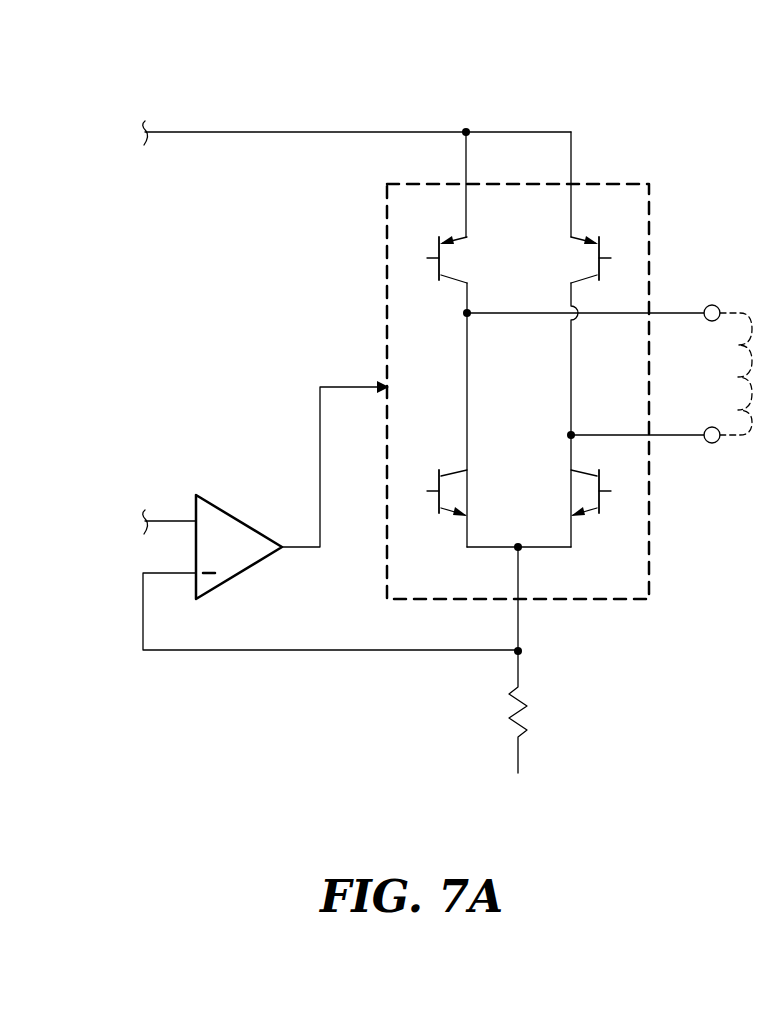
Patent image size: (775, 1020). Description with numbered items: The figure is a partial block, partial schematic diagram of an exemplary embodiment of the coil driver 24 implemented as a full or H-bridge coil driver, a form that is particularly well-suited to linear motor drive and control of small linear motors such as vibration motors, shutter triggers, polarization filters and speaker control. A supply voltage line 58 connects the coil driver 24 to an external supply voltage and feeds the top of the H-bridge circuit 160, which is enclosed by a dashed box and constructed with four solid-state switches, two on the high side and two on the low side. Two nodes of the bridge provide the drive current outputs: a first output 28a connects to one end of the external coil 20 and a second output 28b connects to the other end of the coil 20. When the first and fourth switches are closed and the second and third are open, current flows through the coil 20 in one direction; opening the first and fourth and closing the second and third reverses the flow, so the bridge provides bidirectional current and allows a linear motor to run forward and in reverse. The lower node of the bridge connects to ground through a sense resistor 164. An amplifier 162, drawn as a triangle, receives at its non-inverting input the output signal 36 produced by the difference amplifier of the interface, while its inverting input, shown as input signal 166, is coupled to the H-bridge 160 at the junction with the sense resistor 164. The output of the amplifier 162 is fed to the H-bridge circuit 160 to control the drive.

The supply voltage line 58 is at (265, 132).
The coil driver 24 is at (640, 124).
The H-bridge circuit 160 is at (387, 268).
The first output 28a is at (684, 313).
The second output 28b is at (686, 435).
The coil 20 is at (728, 366).
The output signal 36 is at (166, 521).
The amplifier 162 is at (292, 490).
The input signal 166 is at (323, 650).
The sense resistor 164 is at (524, 705).